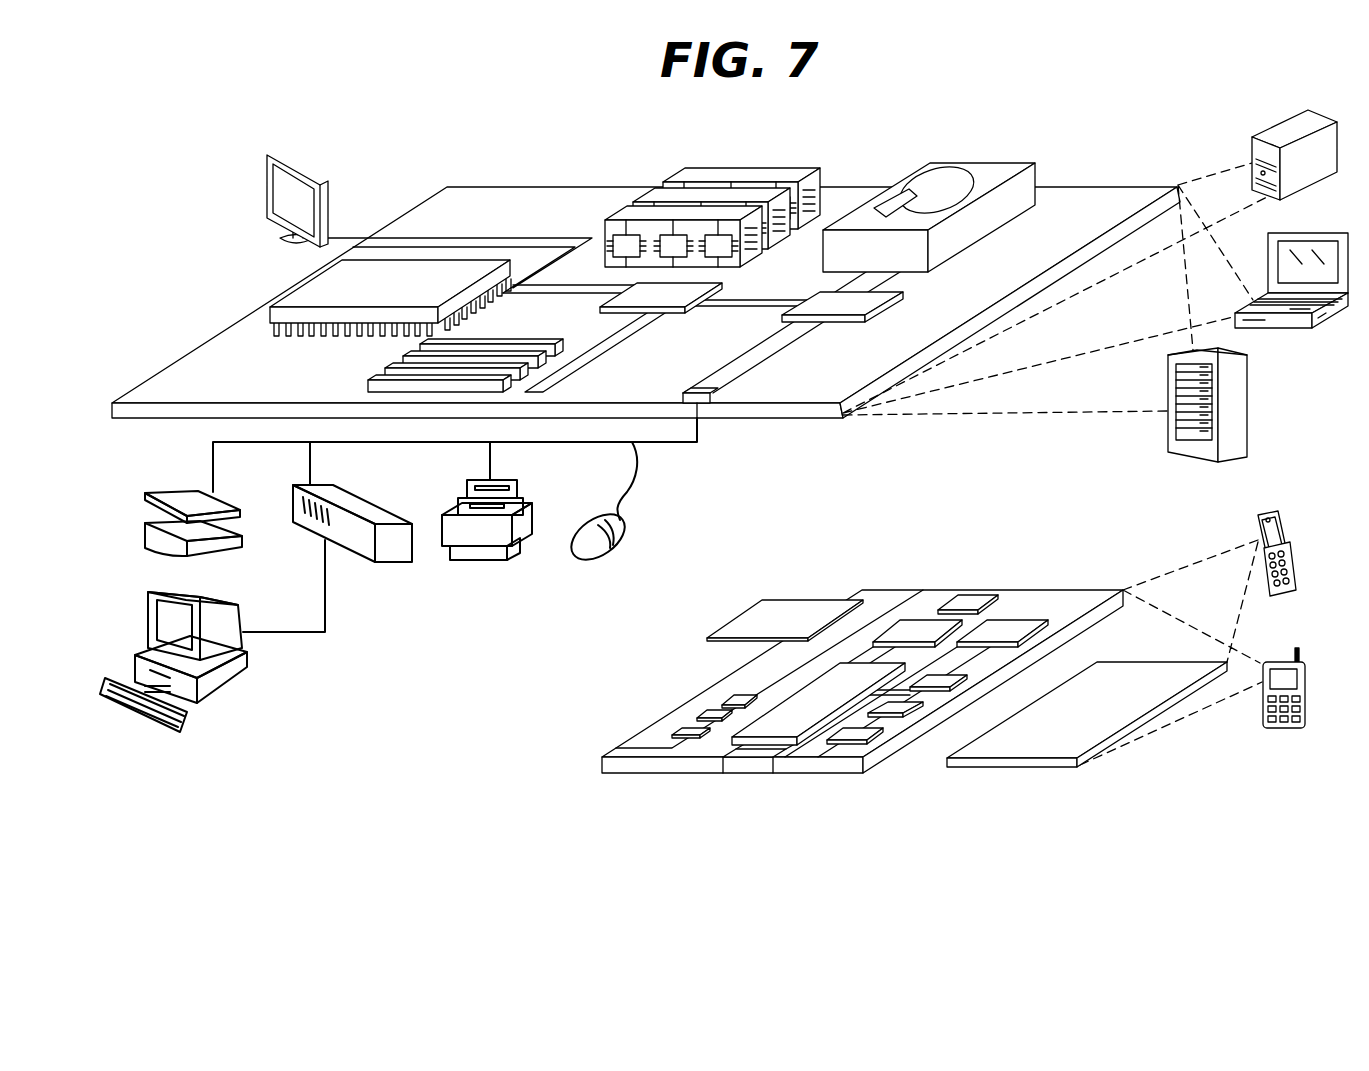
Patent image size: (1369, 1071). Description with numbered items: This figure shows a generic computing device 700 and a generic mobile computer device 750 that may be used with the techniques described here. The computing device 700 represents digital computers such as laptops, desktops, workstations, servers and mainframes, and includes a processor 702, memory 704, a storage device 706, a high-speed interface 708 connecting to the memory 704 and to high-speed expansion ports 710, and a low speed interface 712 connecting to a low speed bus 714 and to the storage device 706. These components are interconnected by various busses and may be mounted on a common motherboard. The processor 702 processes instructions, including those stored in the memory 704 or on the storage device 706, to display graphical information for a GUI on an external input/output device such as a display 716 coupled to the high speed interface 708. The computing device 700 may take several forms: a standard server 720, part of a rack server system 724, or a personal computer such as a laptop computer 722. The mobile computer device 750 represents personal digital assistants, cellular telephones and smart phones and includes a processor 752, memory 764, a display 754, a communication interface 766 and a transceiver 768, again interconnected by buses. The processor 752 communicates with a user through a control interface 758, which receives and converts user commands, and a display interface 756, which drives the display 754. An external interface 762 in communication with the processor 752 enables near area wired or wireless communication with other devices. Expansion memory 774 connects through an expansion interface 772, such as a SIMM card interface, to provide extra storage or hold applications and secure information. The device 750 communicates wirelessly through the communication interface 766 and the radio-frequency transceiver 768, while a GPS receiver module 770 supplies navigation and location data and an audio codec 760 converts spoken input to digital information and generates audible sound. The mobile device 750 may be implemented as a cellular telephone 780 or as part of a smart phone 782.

The computing device 700 is at (398, 130).
The processor 702 is at (297, 290).
The memory 704 is at (740, 177).
The storage device 706 is at (970, 162).
The high-speed interface 708 is at (672, 293).
The high-speed expansion ports 710 is at (395, 362).
The low speed interface 712 is at (813, 298).
The low speed bus 714 is at (703, 388).
The display 716 is at (273, 152).
The standard server 720 is at (1272, 133).
The laptop computer 722 is at (1328, 233).
The rack server system 724 is at (1250, 407).
The mobile computer device 750 is at (557, 784).
The processor 752 is at (787, 707).
The display 754 is at (1124, 676).
The display interface 756 is at (865, 736).
The control interface 758 is at (903, 707).
The audio codec 760 is at (943, 676).
The external interface 762 is at (750, 758).
The memory 764 is at (703, 713).
The communication interface 766 is at (920, 622).
The transceiver 768 is at (1010, 622).
The GPS receiver module 770 is at (970, 597).
The expansion interface 772 is at (845, 600).
The expansion memory 774 is at (762, 600).
The cellular telephone 780 is at (1268, 513).
The smart phone 782 is at (1277, 660).